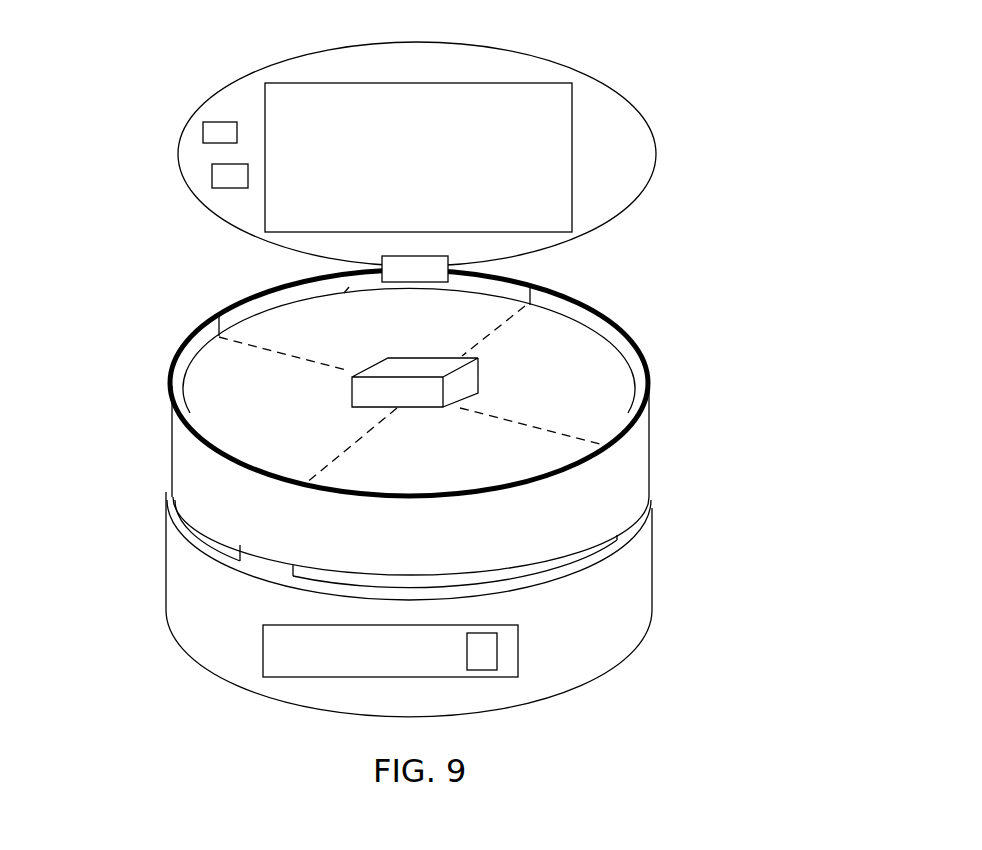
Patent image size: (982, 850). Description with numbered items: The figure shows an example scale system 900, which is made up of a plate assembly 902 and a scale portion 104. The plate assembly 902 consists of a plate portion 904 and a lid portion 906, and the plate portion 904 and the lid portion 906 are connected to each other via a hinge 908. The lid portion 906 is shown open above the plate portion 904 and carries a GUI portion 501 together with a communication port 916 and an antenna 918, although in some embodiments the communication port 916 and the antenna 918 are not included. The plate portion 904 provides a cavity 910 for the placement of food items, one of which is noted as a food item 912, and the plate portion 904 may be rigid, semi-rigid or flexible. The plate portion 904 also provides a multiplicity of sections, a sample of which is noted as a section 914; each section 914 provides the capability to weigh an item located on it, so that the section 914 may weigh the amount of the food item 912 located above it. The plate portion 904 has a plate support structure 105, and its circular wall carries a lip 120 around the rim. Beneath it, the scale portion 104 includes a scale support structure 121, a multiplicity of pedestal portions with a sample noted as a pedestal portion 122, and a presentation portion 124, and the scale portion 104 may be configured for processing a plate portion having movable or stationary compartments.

The scale system 900 is at (168, 58).
The lid portion 906 is at (563, 62).
The GUI portion 501 is at (573, 157).
The communication port 916 is at (200, 123).
The antenna 918 is at (206, 174).
The hinge 908 is at (407, 268).
The plate assembly 902 is at (703, 211).
The plate portion 904 is at (596, 303).
The section 914 is at (507, 367).
The plate support structure 105 is at (648, 355).
The cavity 910 is at (590, 385).
The food item 912 is at (352, 393).
The lip 120 is at (633, 427).
The scale portion 104 is at (653, 542).
The pedestal portion 122 is at (583, 560).
The scale support structure 121 is at (560, 698).
The presentation portion 124 is at (347, 657).